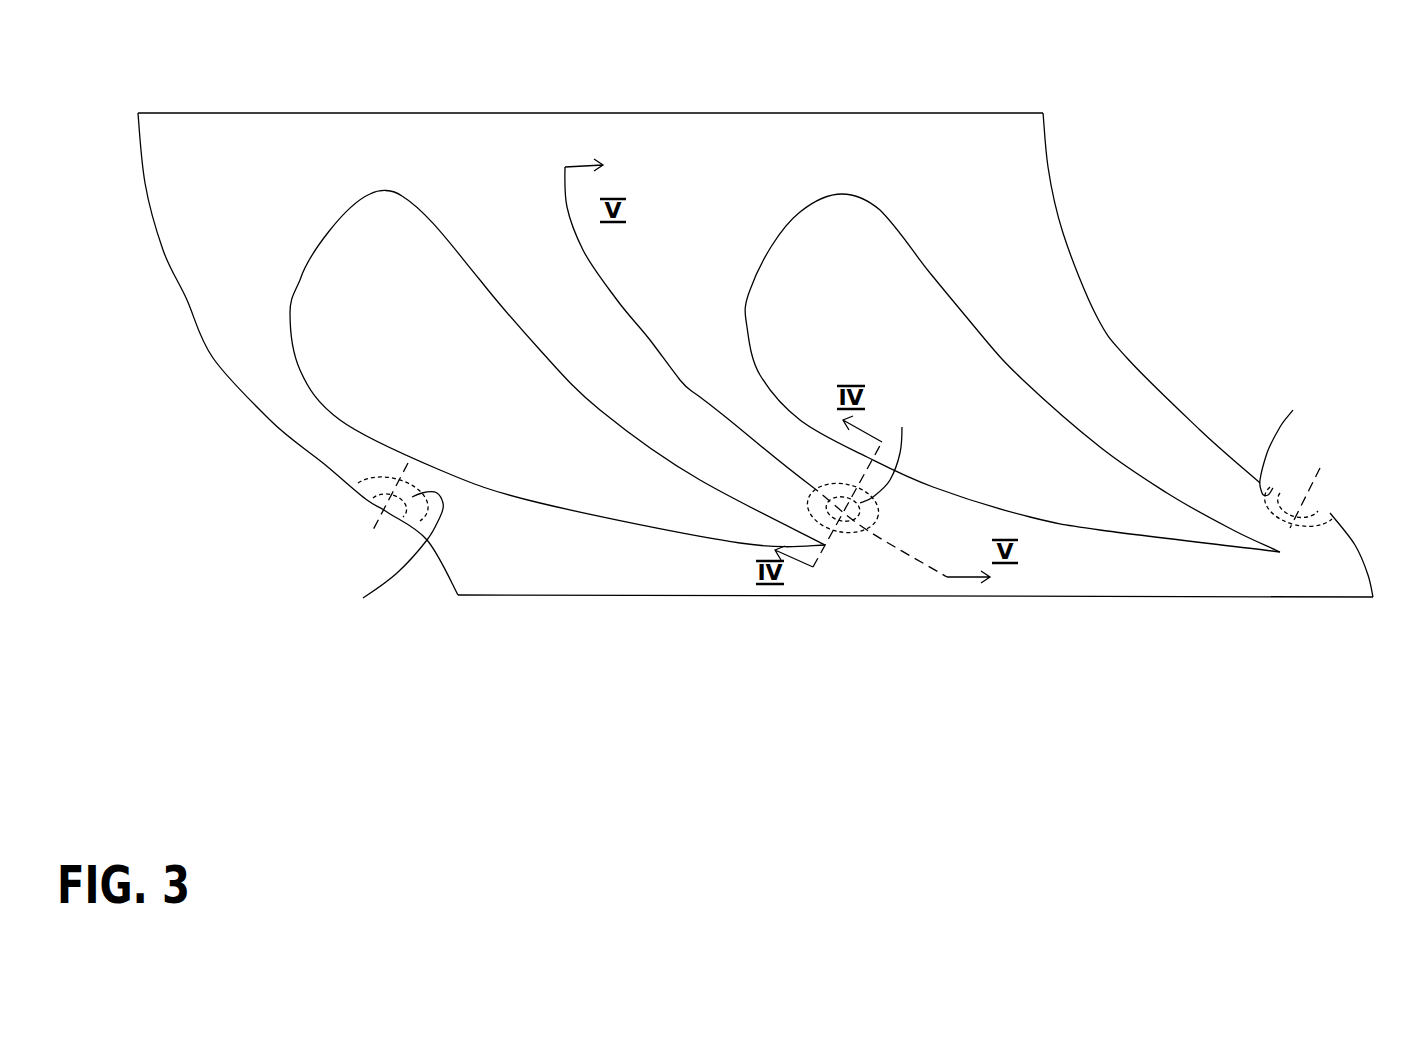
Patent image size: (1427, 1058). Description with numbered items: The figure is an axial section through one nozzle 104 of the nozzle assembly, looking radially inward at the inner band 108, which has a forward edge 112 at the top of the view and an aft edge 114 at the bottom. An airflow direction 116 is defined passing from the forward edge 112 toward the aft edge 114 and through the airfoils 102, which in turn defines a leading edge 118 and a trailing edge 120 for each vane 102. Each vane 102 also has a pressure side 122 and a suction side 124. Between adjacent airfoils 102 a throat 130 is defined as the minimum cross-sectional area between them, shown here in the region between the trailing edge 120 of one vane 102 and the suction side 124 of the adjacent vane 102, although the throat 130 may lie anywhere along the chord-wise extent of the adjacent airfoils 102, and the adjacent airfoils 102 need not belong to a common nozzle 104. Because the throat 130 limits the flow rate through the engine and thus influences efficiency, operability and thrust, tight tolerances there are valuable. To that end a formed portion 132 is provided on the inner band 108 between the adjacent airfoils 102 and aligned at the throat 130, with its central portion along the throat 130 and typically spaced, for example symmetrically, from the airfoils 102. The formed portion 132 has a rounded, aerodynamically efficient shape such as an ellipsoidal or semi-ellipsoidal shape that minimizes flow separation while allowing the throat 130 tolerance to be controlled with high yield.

The airfoil 102 is at (793, 378).
The nozzle 104 is at (168, 478).
The inner band 108 is at (952, 186).
The forward edge 112 is at (630, 112).
The aft edge 114 is at (548, 597).
The airflow direction 116 is at (515, 166).
The leading edge 118 is at (368, 193).
The trailing edge 120 is at (824, 546).
The pressure side 122 is at (540, 347).
The suction side 124 is at (497, 497).
The throat 130 is at (372, 531).
The formed portion 132 is at (823, 504).